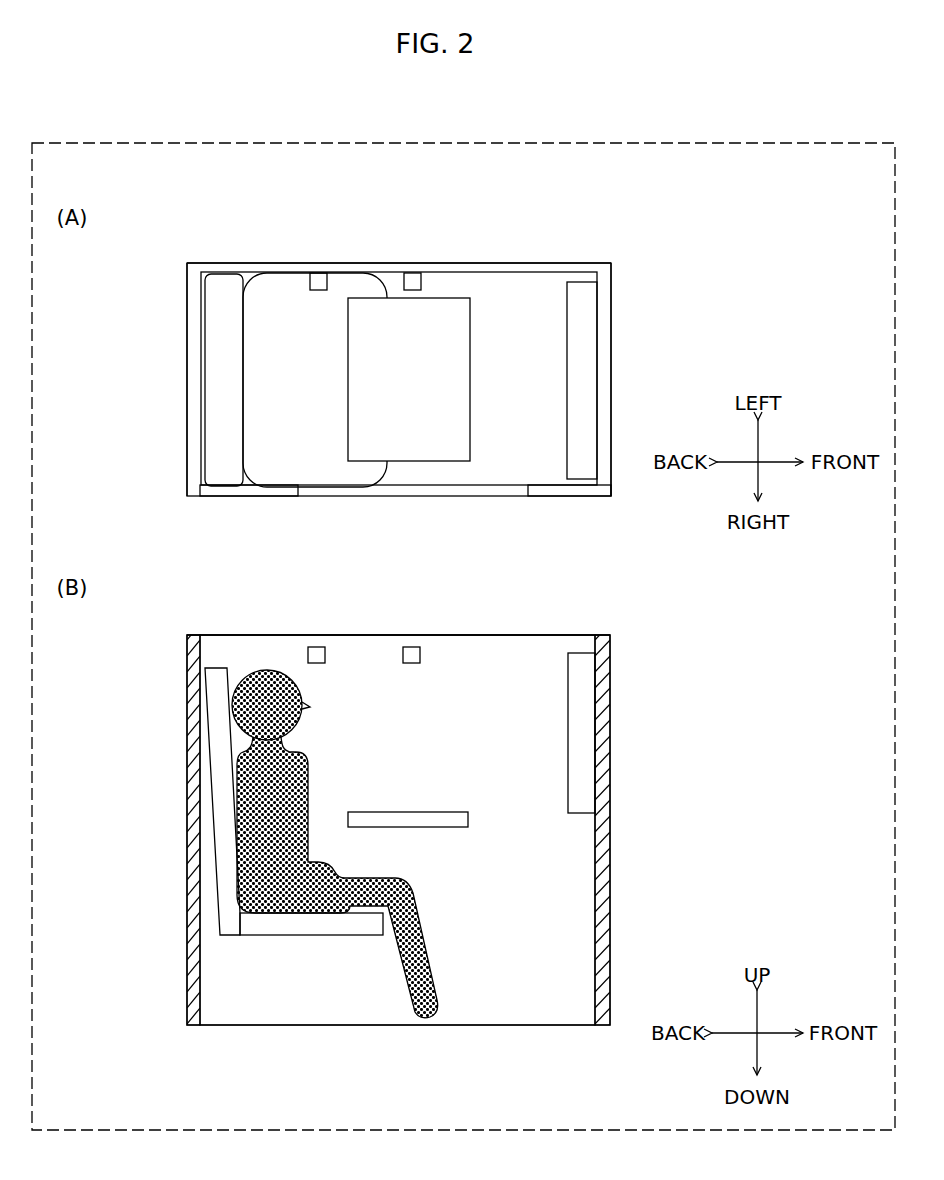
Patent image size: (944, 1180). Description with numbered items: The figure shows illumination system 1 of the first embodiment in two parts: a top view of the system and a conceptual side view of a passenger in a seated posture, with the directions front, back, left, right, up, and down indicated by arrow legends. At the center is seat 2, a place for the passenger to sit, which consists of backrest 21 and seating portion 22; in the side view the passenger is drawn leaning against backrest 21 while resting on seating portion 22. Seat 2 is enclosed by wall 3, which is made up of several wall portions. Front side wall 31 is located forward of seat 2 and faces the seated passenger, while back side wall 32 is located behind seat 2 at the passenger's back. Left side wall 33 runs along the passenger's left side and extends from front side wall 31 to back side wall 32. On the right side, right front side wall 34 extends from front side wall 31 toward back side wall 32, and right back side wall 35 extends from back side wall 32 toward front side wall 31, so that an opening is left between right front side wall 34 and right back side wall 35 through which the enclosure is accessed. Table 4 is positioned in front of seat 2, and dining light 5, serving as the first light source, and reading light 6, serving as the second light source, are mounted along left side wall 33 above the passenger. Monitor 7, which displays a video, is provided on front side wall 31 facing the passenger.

The illumination system 1 is at (541, 205).
The seat 2 is at (131, 398).
The backrest 21 is at (223, 400).
The seating portion 22 is at (255, 437).
The wall 3 is at (554, 261).
The front side wall 31 is at (602, 353).
The back side wall 32 is at (193, 355).
The left side wall 33 is at (483, 272).
The right front side wall 34 is at (565, 490).
The right back side wall 35 is at (232, 490).
The table 4 is at (416, 394).
The dining light 5 is at (412, 272).
The reading light 6 is at (318, 272).
The monitor 7 is at (582, 380).